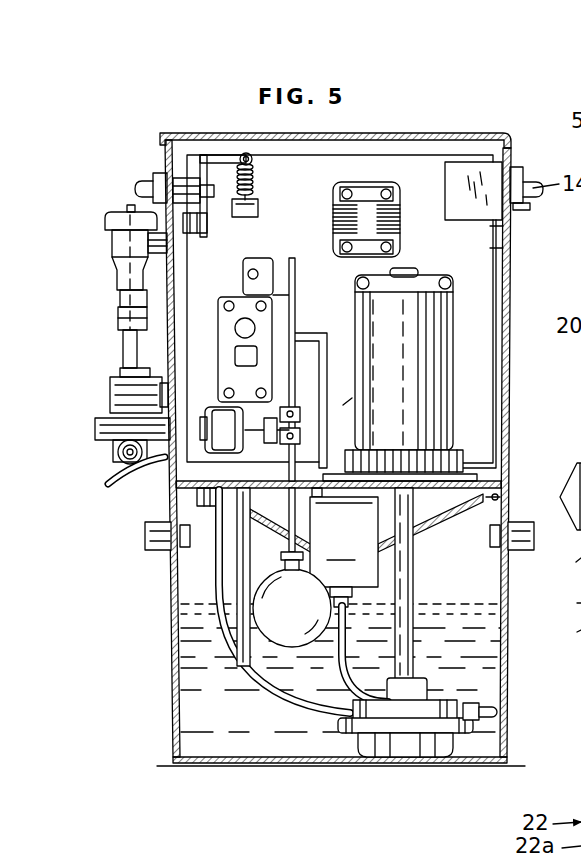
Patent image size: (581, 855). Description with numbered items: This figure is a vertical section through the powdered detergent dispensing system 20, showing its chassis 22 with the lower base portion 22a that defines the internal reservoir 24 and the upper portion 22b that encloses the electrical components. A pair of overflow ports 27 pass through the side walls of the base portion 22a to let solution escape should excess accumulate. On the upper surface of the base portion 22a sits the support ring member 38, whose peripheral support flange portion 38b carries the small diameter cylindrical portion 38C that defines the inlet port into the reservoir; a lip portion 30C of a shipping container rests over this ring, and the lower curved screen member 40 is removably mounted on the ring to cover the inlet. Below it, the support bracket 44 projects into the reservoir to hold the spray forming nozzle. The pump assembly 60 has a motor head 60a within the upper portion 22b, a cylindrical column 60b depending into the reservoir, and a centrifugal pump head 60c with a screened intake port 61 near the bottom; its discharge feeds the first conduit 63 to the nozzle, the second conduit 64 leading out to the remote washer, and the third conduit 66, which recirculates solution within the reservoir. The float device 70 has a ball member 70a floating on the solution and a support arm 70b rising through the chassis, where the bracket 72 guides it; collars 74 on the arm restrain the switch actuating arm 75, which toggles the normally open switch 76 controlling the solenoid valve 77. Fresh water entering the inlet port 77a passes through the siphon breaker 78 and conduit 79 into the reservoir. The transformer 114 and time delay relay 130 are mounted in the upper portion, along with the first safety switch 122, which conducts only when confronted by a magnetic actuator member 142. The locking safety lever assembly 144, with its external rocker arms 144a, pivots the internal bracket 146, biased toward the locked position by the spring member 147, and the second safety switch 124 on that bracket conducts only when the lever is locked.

The powdered detergent dispensing system 20 is at (492, 120).
The chassis 22 is at (171, 727).
The lower base portion 22a is at (166, 697).
The upper portion 22b is at (434, 132).
The reservoir 24 is at (225, 758).
The overflow ports 27 is at (157, 552).
The support ring member 38 is at (501, 497).
The peripheral support flange portion 38b is at (560, 603).
The small diameter cylindrical portion 38C is at (563, 633).
The lip portion 30C is at (563, 570).
The lower curved screen member 40 is at (432, 520).
The support bracket 44 is at (344, 547).
The pump assembly 60 is at (354, 749).
The motor head 60a is at (453, 313).
The cylindrical column 60b is at (413, 656).
The centrifugal pump head 60c is at (386, 752).
The screened intake port 61 is at (428, 760).
The first conduit 63 is at (340, 651).
The second conduit 64 is at (284, 700).
The third conduit 66 is at (498, 712).
The float device 70 is at (270, 555).
The ball member 70a is at (294, 634).
The support arm 70b is at (296, 327).
The bracket 72 is at (328, 369).
The collars 74 is at (300, 414).
The switch actuating arm 75 is at (270, 444).
The switch 76 is at (224, 453).
The solenoid valve 77 is at (112, 398).
The inlet port 77a is at (140, 475).
The siphon breaker 78 is at (132, 263).
The conduit 79 is at (236, 652).
The transformer 114 is at (375, 223).
The first safety switch 122 is at (343, 405).
The second safety switch 124 is at (199, 226).
The time delay relay 130 is at (258, 326).
The magnetic actuator members 142 is at (574, 468).
The locking safety lever assembly 144 is at (524, 172).
The rocker arms 144a is at (155, 178).
The bracket 146 is at (204, 153).
The spring member 147 is at (254, 178).